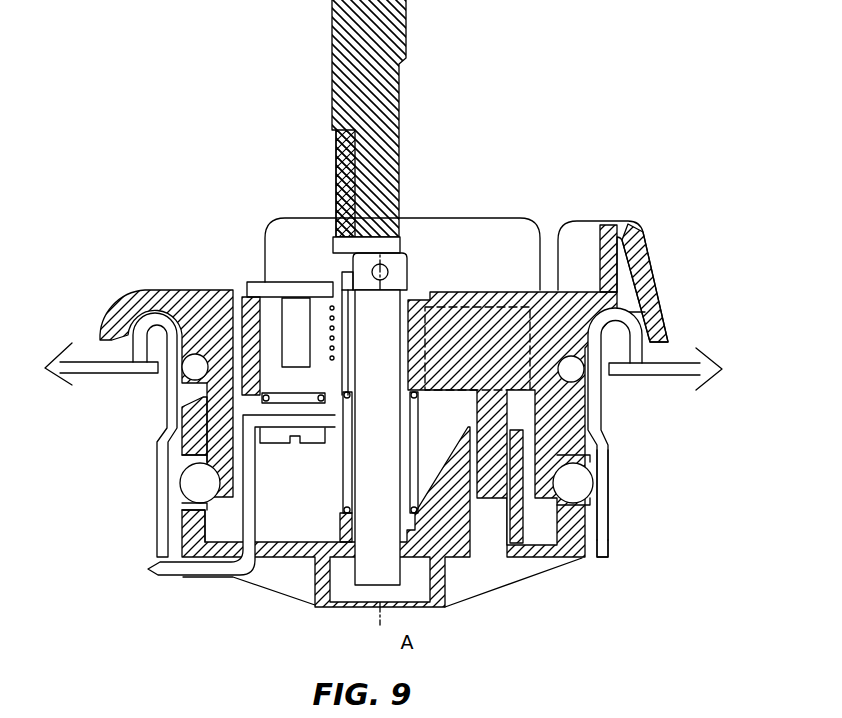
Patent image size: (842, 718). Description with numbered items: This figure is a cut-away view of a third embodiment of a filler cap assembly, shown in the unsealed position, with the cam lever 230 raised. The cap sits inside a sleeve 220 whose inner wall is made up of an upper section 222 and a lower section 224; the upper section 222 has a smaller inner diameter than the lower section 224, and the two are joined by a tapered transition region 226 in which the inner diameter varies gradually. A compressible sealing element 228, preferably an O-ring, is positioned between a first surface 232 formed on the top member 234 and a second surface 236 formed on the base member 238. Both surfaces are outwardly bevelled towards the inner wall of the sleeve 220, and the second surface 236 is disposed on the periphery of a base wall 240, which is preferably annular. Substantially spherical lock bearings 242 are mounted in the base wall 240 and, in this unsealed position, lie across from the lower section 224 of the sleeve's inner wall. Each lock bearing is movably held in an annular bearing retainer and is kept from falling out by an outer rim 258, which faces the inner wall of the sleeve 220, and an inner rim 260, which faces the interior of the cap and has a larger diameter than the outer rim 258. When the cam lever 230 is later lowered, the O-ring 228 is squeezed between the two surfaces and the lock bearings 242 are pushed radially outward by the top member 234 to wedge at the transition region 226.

The sleeve 220 is at (608, 550).
The upper section 222 is at (584, 378).
The lower section 224 is at (600, 513).
The tapered transition region 226 is at (590, 434).
The compressible sealing element 228 is at (196, 362).
The cam lever 230 is at (402, 58).
The first surface 232 is at (578, 345).
The top member 234 is at (104, 300).
The second surface 236 is at (578, 400).
The base member 238 is at (290, 565).
The base wall 240 is at (194, 417).
The lock bearings 242 is at (193, 492).
The outer rim 258 is at (257, 495).
The inner rim 260 is at (212, 512).